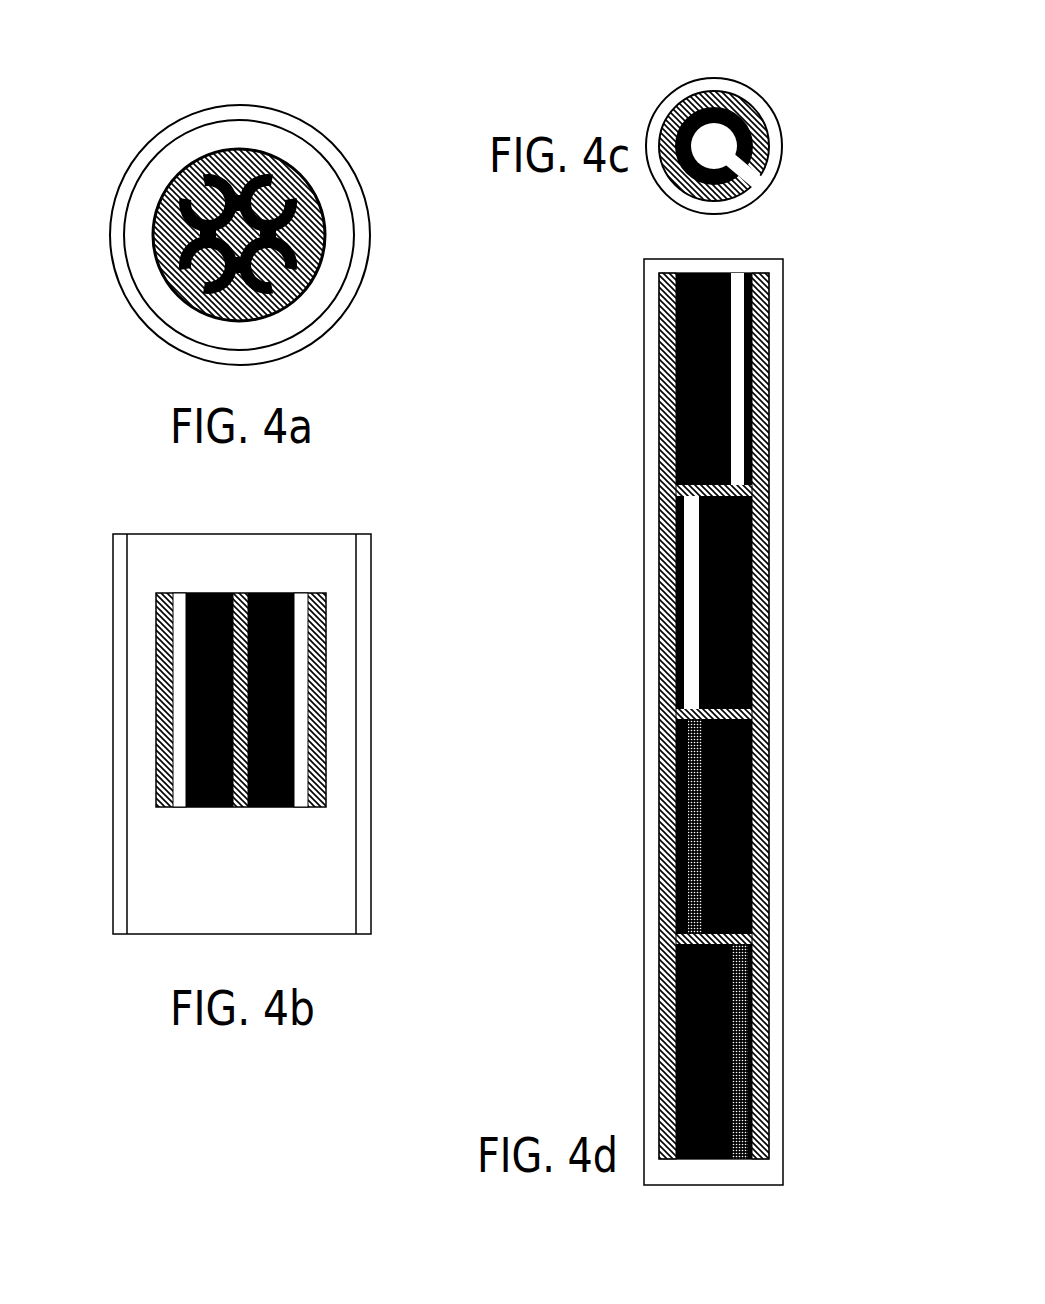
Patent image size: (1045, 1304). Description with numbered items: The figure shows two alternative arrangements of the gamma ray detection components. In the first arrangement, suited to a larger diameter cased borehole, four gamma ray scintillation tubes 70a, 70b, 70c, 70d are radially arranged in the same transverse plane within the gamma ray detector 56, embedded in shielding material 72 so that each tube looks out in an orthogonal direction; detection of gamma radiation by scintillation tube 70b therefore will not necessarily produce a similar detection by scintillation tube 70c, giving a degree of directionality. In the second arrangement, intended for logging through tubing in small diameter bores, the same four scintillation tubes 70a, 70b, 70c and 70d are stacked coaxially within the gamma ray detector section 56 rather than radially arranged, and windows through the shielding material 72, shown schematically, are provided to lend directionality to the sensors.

In FIG. 4A, the gamma ray detector 56 is at (285, 123).
In FIG. 4B, the gamma ray detector 56 is at (363, 610).
In FIG. 4C, the gamma ray detector 56 is at (748, 100).
In FIG. 4D, the gamma ray detector 56 is at (777, 284).
In FIG. 4A, the shielding material 72 is at (325, 228).
In FIG. 4B, the shielding material 72 is at (323, 775).
In FIG. 4C, the shielding material 72 is at (763, 132).
In FIG. 4D, the shielding material 72 is at (766, 433).
In FIG. 4A, the gamma ray scintillation tube 70a is at (270, 201).
In FIG. 4C, the gamma ray scintillation tube 70a is at (713, 145).
In FIG. 4D, the gamma ray scintillation tube 70a is at (766, 350).
In FIG. 4A, the gamma ray scintillation tube 70b is at (270, 267).
In FIG. 4B, the gamma ray scintillation tube 70b is at (303, 715).
In FIG. 4D, the gamma ray scintillation tube 70b is at (766, 576).
In FIG. 4A, the gamma ray scintillation tube 70c is at (207, 267).
In FIG. 4B, the gamma ray scintillation tube 70c is at (213, 807).
In FIG. 4D, the gamma ray scintillation tube 70c is at (764, 793).
In FIG. 4A, the gamma ray scintillation tube 70d is at (210, 205).
In FIG. 4D, the gamma ray scintillation tube 70d is at (752, 1012).